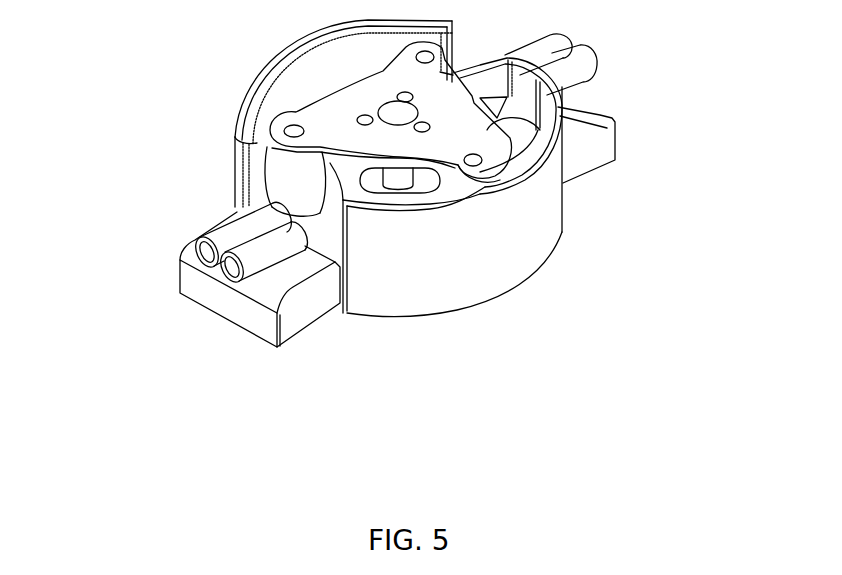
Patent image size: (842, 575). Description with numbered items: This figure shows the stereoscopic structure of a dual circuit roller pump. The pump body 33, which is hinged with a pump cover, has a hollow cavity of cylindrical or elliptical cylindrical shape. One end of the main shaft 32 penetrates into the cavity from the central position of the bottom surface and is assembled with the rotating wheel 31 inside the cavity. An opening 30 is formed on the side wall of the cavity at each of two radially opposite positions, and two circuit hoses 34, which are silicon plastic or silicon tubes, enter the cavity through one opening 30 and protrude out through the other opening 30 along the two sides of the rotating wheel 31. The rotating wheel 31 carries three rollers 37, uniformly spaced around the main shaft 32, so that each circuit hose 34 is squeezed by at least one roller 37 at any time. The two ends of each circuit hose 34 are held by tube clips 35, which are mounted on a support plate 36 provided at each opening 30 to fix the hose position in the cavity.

The opening 30 is at (340, 313).
The rotating wheel 31 is at (333, 125).
The main shaft 32 is at (397, 175).
The pump body 33 is at (543, 176).
The circuit hose 34 is at (263, 195).
The tube clip 35 is at (250, 227).
The support plate 36 is at (593, 150).
The roller 37 is at (305, 198).